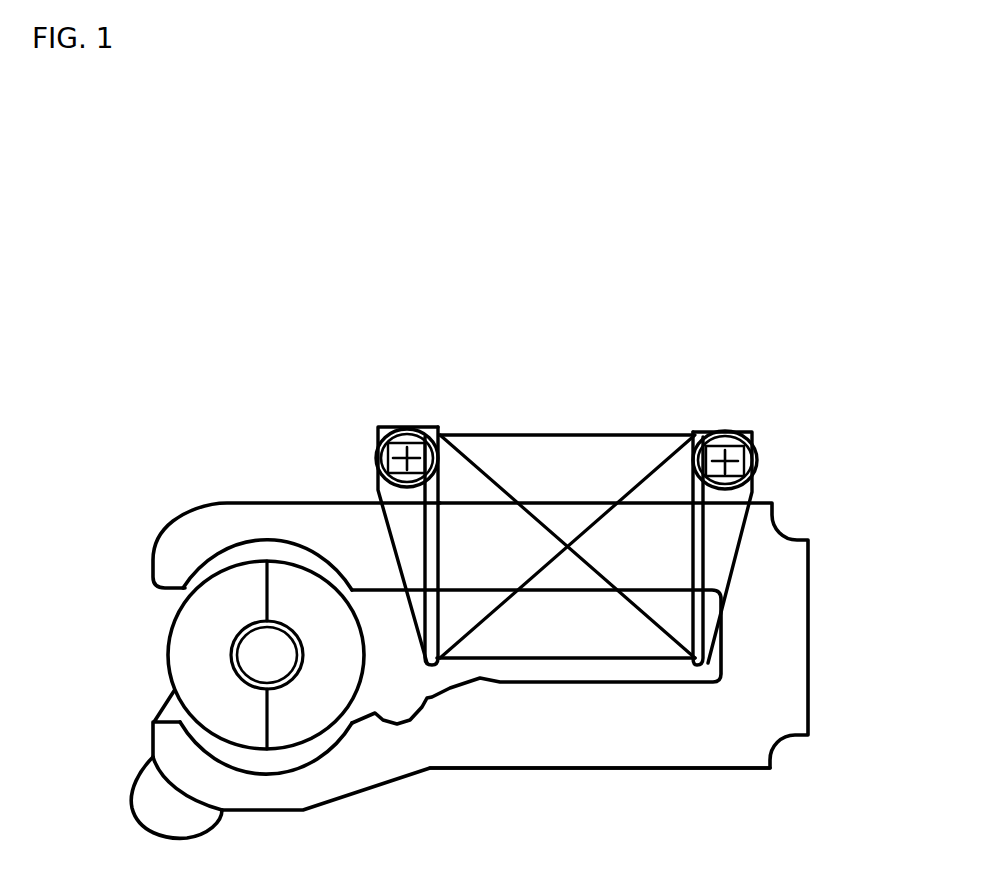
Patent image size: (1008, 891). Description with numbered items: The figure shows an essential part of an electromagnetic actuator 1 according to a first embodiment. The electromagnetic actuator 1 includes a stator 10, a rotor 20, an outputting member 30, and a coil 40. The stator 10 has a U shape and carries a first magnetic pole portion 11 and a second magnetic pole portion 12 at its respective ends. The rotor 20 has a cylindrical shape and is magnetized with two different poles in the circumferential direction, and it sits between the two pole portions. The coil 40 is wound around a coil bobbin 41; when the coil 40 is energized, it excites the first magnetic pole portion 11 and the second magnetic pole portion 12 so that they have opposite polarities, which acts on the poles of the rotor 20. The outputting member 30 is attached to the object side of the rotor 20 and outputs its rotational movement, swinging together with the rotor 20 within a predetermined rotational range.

The electromagnetic actuator 1 is at (164, 379).
The stator 10 is at (777, 688).
The first magnetic pole portion 11 is at (252, 515).
The second magnetic pole portion 12 is at (280, 795).
The rotor 20 is at (206, 575).
The outputting member 30 is at (141, 826).
The coil 40 is at (583, 448).
The coil bobbin 41 is at (753, 440).